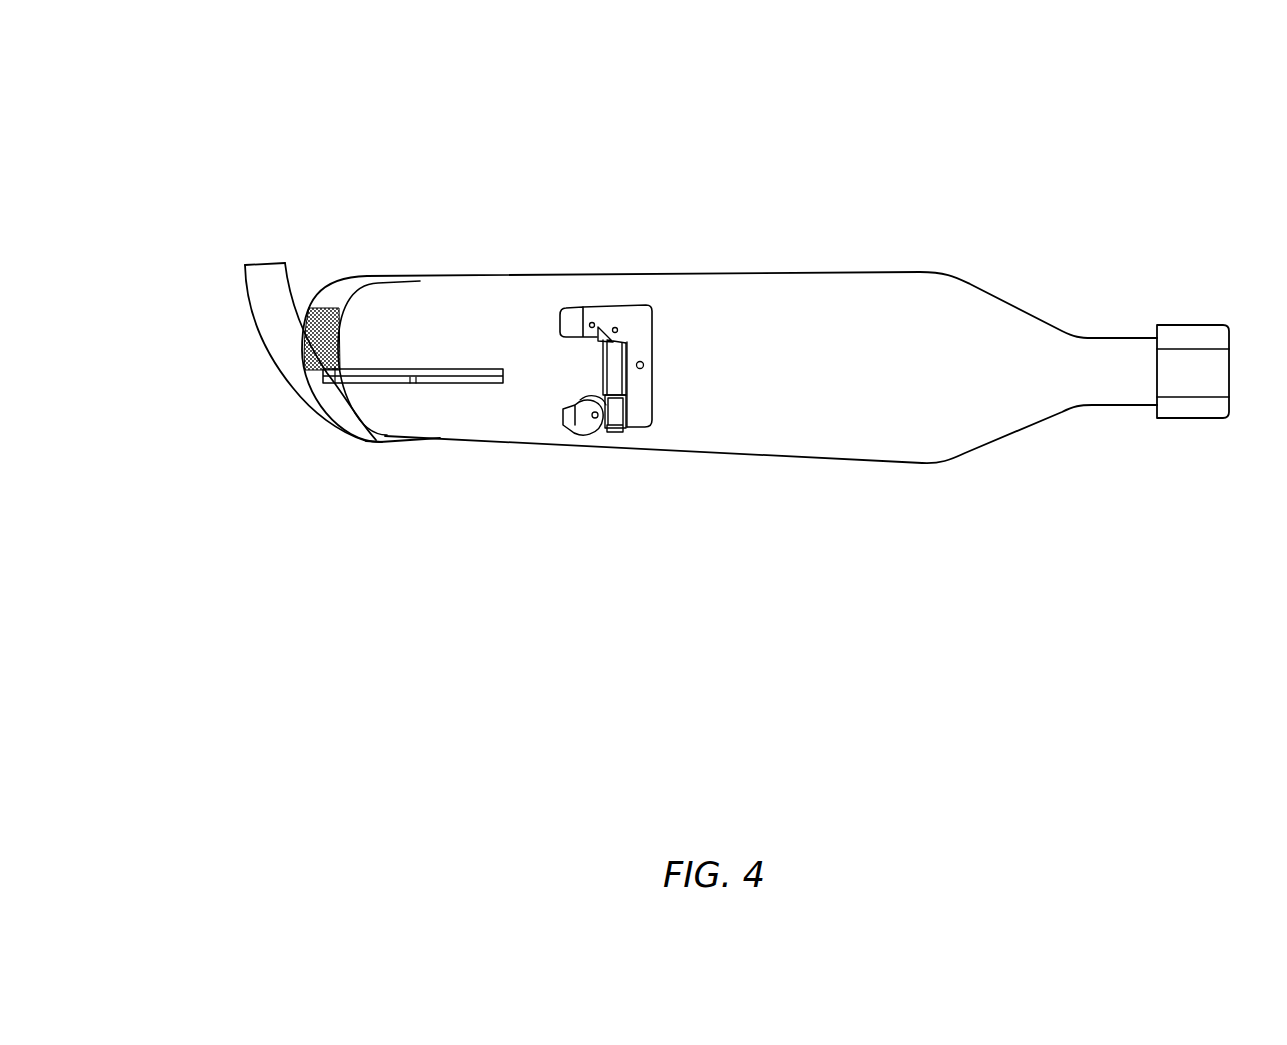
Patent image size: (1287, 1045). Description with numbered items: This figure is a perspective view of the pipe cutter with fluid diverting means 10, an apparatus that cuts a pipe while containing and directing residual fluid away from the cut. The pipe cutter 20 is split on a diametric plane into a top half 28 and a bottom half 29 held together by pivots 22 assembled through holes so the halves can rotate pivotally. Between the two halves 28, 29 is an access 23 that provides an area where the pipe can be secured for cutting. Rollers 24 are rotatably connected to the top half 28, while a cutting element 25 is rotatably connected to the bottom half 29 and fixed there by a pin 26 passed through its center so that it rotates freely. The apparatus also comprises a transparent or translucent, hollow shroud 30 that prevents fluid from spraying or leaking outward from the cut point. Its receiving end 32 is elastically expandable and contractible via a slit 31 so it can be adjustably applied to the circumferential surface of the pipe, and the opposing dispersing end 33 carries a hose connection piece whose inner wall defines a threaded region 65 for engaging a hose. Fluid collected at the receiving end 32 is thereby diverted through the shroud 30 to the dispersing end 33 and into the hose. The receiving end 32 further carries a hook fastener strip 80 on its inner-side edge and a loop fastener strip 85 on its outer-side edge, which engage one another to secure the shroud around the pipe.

The pipe cutter with fluid diverting means 10 is at (1173, 179).
The pipe cutter 20 is at (510, 264).
The pivots 22 is at (641, 360).
The access 23 is at (584, 379).
The rollers 24 is at (597, 338).
The cutting element 25 is at (590, 408).
The pin 26 is at (592, 418).
The top half 28 is at (627, 318).
The bottom half 29 is at (607, 422).
The shroud 30 is at (772, 347).
The slit 31 is at (479, 371).
The receiving end 32 is at (463, 280).
The dispersing end 33 is at (1075, 372).
The threaded region 65 is at (1197, 393).
The hook fastener strip 80 is at (303, 335).
The loop fastener strip 85 is at (312, 388).